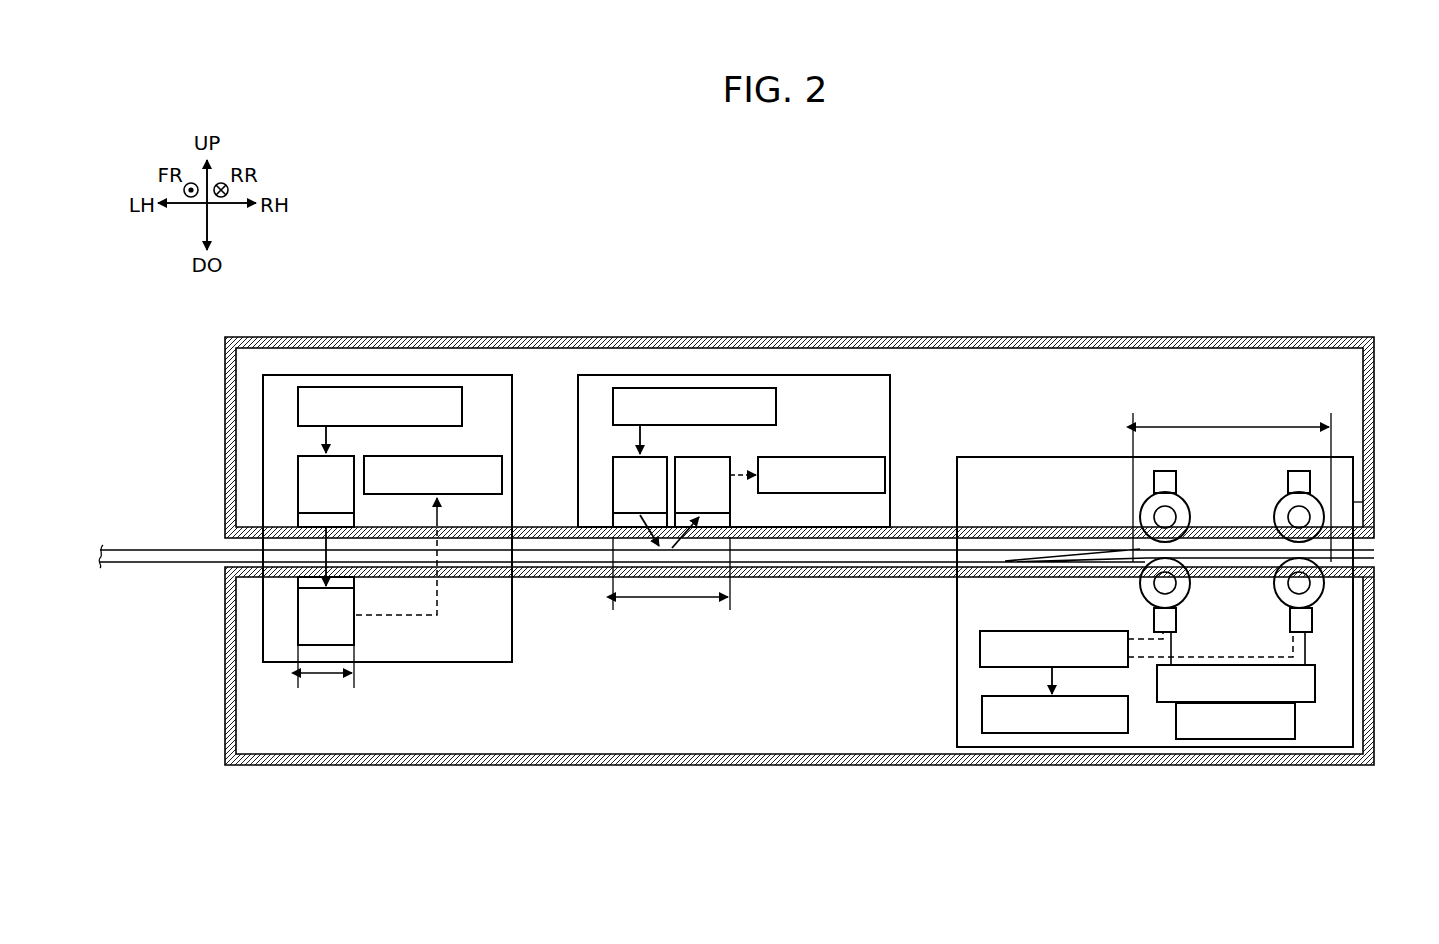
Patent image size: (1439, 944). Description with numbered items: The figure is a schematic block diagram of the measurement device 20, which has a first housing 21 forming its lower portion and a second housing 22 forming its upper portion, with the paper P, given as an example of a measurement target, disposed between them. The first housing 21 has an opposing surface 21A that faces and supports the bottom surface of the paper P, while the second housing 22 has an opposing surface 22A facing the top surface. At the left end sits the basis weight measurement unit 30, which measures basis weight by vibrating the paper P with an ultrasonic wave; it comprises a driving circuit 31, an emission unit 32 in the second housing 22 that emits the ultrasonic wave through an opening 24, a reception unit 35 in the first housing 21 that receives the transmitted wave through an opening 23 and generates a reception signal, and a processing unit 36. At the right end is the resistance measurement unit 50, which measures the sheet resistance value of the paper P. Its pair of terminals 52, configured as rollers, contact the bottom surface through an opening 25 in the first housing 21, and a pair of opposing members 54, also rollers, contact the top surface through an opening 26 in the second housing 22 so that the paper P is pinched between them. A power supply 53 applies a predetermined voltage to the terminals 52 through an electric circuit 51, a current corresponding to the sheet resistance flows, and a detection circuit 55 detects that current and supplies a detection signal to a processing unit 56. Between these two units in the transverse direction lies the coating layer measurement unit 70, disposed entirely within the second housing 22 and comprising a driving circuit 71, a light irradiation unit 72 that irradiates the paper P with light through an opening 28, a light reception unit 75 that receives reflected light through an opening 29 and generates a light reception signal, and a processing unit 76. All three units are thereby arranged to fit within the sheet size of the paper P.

The measurement device 20 is at (1289, 240).
The first housing 21 is at (1325, 770).
The opposing surface 21A is at (910, 568).
The second housing 22 is at (1216, 330).
The opposing surface 22A is at (921, 537).
The opening 23 is at (310, 590).
The opening 24 is at (312, 530).
The opening 25 is at (1274, 586).
The opening 26 is at (1277, 516).
The opening 28 is at (628, 513).
The opening 29 is at (714, 528).
The basis weight measurement unit 30 is at (512, 612).
The driving circuit 31 is at (378, 387).
The emission unit 32 is at (308, 482).
The reception unit 35 is at (310, 630).
The processing unit 36 is at (480, 456).
The resistance measurement unit 50 is at (1375, 567).
The electric circuit 51 is at (1315, 682).
The pair of terminals 52 is at (1323, 598).
The power supply 53 is at (1295, 717).
The pair of opposing members 54 is at (1325, 488).
The detection circuit 55 is at (980, 648).
The processing unit 56 is at (1055, 733).
The coating layer measurement unit 70 is at (812, 375).
The driving circuit 71 is at (693, 388).
The light irradiation unit 72 is at (612, 480).
The light reception unit 75 is at (704, 458).
The processing unit 76 is at (843, 457).
The paper P is at (135, 563).